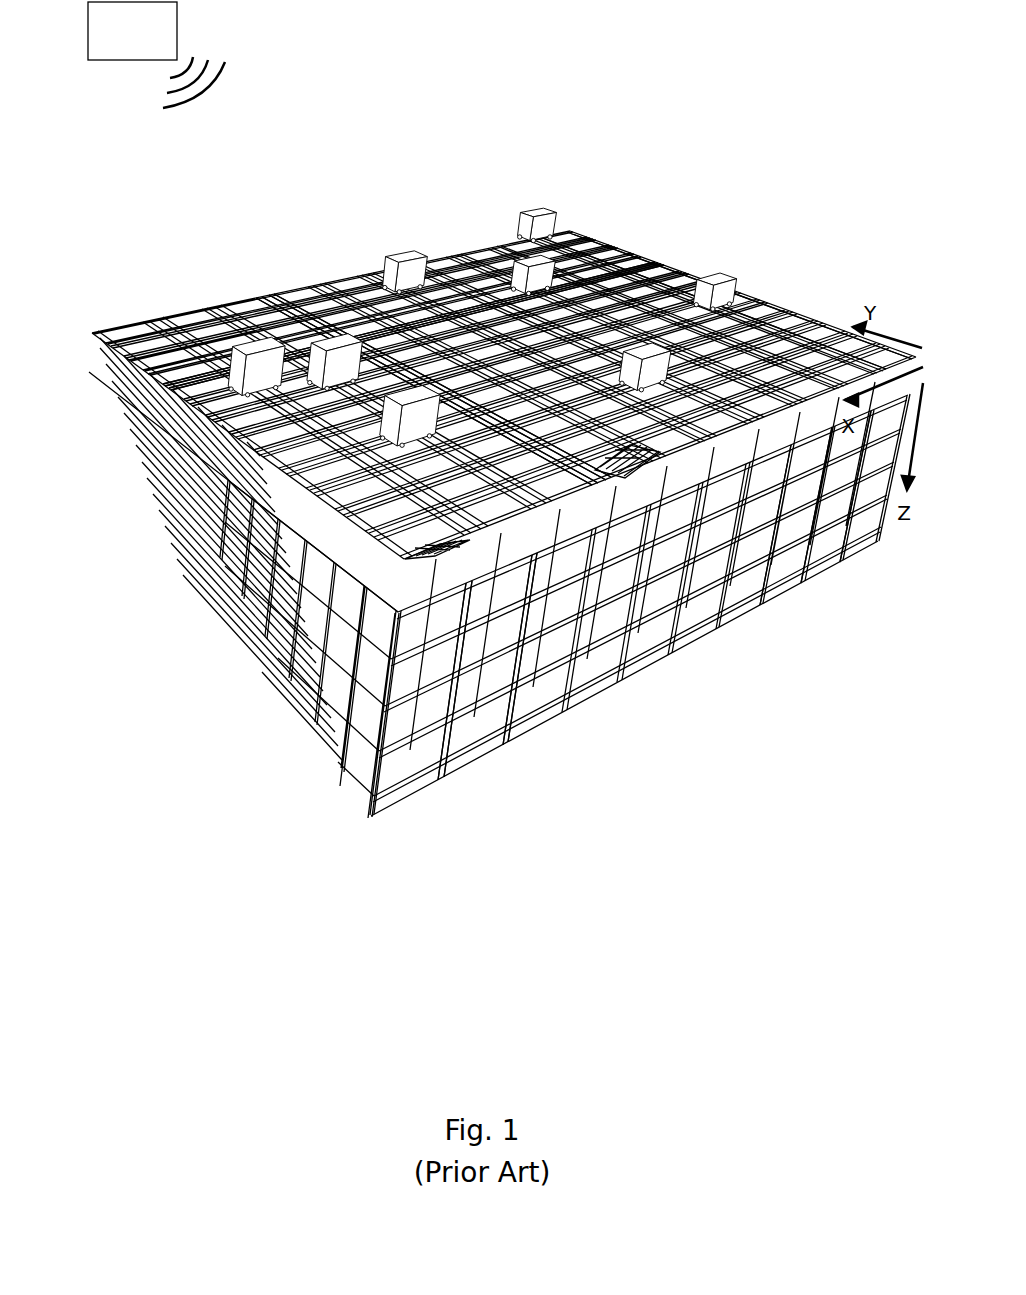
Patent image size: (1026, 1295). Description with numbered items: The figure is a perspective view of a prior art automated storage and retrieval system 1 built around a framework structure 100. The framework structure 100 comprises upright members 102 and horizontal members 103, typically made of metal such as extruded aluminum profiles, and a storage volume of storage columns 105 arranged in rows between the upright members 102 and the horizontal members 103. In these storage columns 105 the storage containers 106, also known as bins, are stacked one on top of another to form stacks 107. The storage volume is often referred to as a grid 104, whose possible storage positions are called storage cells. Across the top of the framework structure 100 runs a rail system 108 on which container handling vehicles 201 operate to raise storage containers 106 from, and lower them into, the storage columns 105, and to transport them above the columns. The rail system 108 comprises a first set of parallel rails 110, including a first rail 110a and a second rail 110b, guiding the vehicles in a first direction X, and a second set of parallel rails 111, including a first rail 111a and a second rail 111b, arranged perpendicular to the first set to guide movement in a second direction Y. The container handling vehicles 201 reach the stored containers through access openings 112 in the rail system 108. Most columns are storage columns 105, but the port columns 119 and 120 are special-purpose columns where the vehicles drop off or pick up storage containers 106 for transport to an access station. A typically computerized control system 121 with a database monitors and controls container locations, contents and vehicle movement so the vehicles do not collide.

The automated storage and retrieval system 1 is at (450, 130).
The framework structure 100 is at (111, 492).
The upright members 102 is at (298, 718).
The horizontal members 103 is at (707, 545).
The storage grid 104 is at (470, 378).
The storage columns 105 is at (270, 600).
The storage containers 106 is at (440, 600).
The stacks 107 is at (857, 543).
The rail system 108 is at (848, 335).
The first set of parallel rails 110 is at (787, 353).
The first rail in first direction 110a is at (243, 310).
The second rail in first direction 110b is at (267, 303).
The second set of parallel rails 111 is at (357, 293).
The first rail of second direction 111a is at (193, 310).
The second rail of second direction 111b is at (267, 293).
The access opening 112 is at (745, 330).
The first port column 119 is at (452, 538).
The second port column 120 is at (612, 460).
The control system 121 is at (156, 55).
The container handling vehicle 201 is at (548, 228).